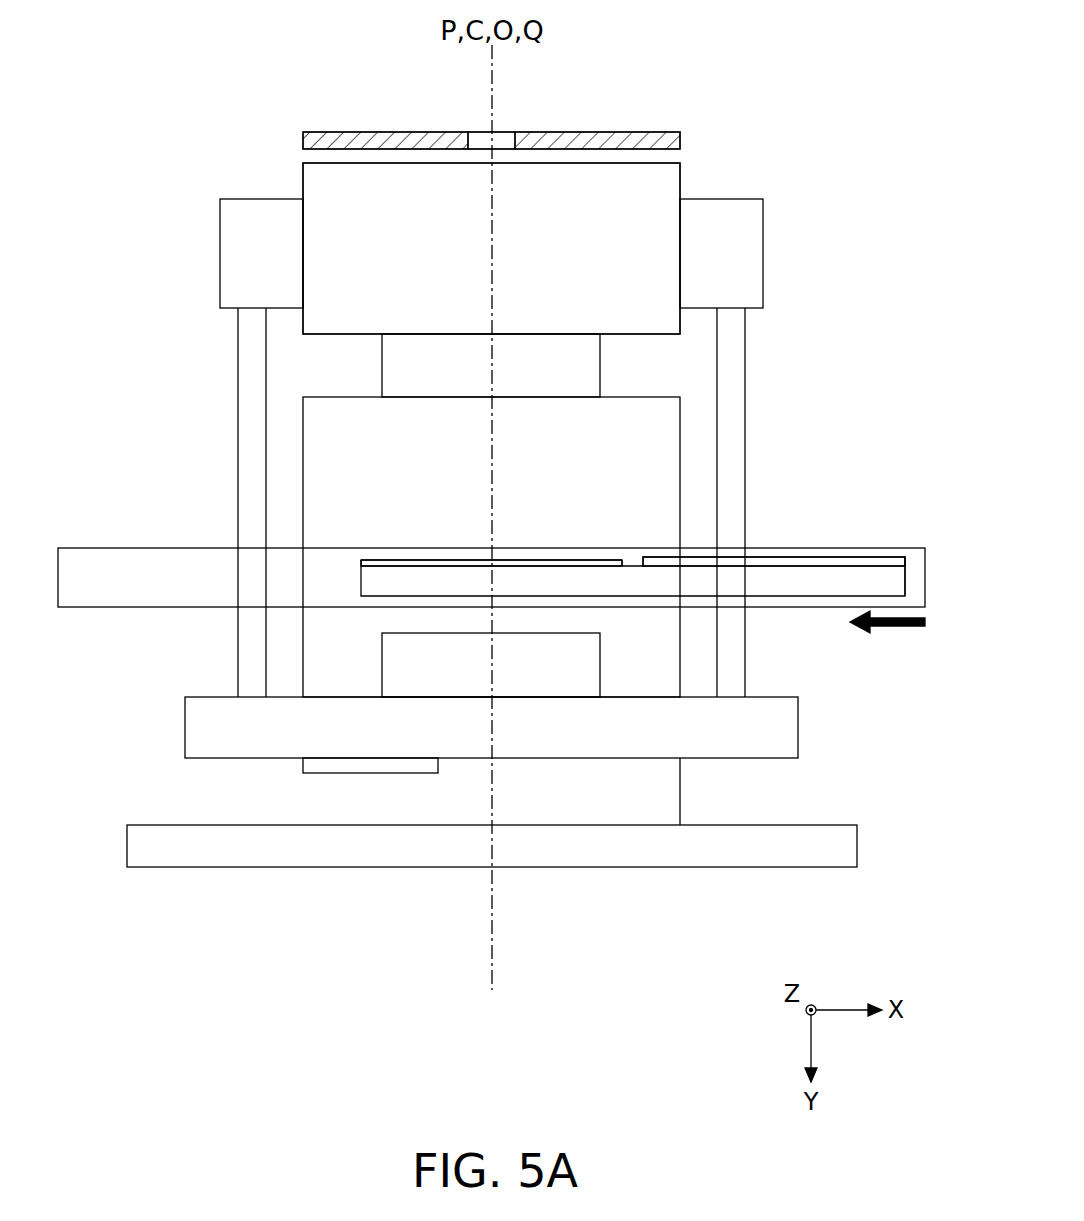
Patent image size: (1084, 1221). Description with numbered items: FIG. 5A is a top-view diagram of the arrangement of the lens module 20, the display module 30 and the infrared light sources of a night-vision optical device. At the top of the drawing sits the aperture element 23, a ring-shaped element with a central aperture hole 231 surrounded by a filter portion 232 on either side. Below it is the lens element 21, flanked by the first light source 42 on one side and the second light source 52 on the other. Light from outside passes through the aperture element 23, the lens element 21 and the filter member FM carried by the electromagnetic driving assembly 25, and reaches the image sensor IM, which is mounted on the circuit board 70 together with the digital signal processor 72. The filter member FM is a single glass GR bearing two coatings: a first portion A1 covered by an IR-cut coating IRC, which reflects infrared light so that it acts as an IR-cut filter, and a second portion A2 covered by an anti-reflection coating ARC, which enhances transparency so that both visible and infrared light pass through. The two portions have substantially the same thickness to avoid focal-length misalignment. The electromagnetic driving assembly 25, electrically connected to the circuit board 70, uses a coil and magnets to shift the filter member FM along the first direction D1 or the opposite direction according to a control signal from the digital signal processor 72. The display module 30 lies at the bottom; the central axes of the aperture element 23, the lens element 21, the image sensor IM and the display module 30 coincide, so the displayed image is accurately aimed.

The lens module 20 is at (674, 102).
The lens element 21 is at (315, 197).
The aperture element 23 is at (303, 133).
The aperture hole 231 is at (515, 132).
The filter portion 232 is at (468, 132).
The electromagnetic driving assembly 25 is at (180, 548).
The display module 30 is at (857, 845).
The first light source 42 is at (763, 256).
The second light source 52 is at (220, 257).
The circuit board 70 is at (798, 727).
The digital signal processor 72 is at (303, 773).
The IR-cut coating IRC is at (410, 560).
The anti-reflection coating ARC is at (855, 558).
The glass GR is at (805, 580).
The filter member FM is at (909, 574).
The first portion A1 is at (361, 553).
The second portion A2 is at (905, 553).
The image sensor IM is at (592, 660).
The first direction D1 is at (887, 637).